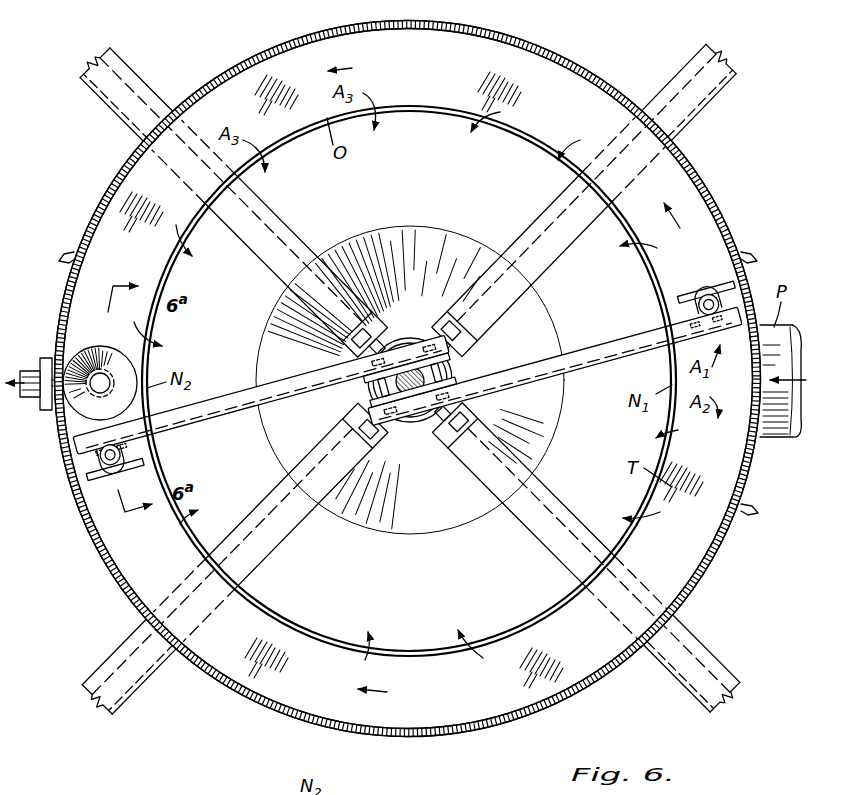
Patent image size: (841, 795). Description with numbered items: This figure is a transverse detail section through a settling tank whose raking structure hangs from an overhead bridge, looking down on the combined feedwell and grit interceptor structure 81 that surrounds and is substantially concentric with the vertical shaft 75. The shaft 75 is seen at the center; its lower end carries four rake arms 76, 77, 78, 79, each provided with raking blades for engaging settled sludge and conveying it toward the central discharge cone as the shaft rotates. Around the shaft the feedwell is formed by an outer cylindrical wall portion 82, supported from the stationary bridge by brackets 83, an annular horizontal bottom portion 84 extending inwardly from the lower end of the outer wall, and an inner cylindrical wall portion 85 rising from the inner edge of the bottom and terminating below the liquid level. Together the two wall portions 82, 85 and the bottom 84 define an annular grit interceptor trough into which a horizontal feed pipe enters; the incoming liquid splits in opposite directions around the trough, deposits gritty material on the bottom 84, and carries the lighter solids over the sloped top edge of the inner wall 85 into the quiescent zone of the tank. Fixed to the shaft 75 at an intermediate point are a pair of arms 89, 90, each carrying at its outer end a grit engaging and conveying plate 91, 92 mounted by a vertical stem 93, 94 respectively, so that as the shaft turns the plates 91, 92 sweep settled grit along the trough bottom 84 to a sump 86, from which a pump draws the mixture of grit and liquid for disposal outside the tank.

The vertical shaft 75 is at (453, 372).
The rake arm 76 is at (283, 226).
The rake arm 77 is at (546, 230).
The rake arm 78 is at (534, 538).
The rake arm 79 is at (289, 538).
The combined feedwell and grit interceptor structure 81 is at (89, 203).
The outer cylindrical wall portion 82 is at (260, 704).
The brackets 83 is at (68, 262).
The annular horizontal bottom portion 84 is at (465, 708).
The inner cylindrical wall portion 85 is at (375, 645).
The sump 86 is at (84, 409).
The arm 89 is at (223, 410).
The arm 90 is at (596, 366).
The grit engaging and conveying plate 91 is at (97, 479).
The grit engaging and conveying plate 92 is at (726, 285).
The vertical stem 93 is at (124, 452).
The vertical stem 94 is at (678, 312).